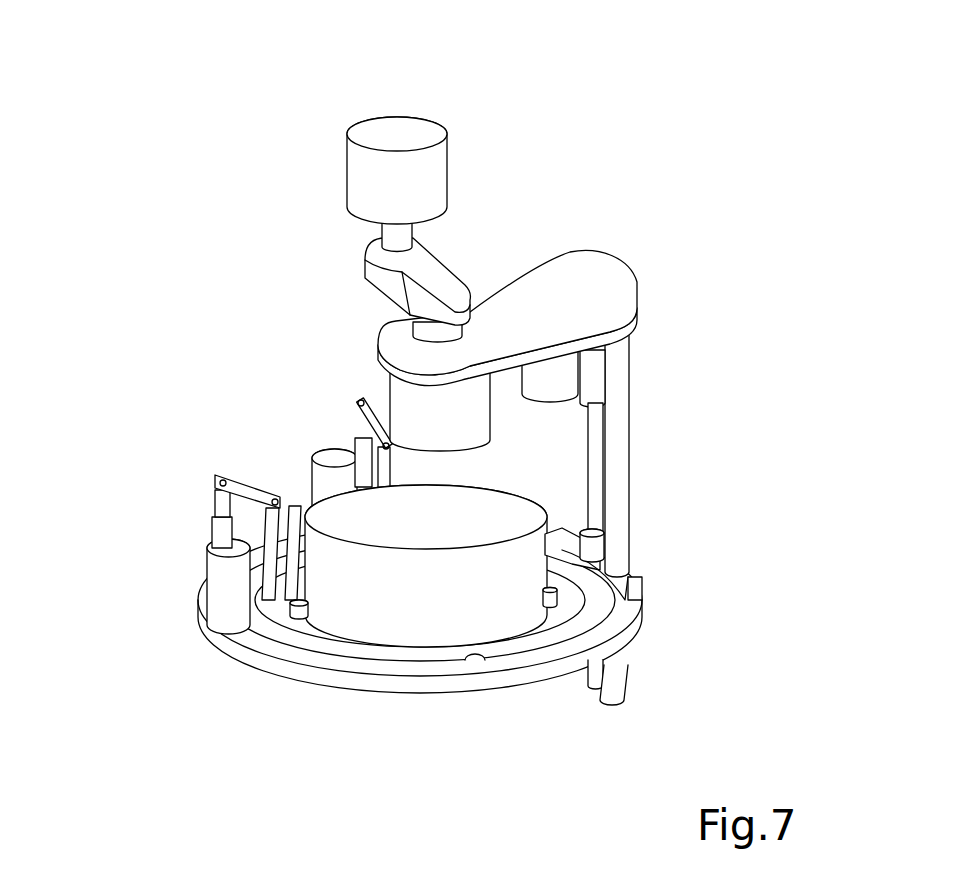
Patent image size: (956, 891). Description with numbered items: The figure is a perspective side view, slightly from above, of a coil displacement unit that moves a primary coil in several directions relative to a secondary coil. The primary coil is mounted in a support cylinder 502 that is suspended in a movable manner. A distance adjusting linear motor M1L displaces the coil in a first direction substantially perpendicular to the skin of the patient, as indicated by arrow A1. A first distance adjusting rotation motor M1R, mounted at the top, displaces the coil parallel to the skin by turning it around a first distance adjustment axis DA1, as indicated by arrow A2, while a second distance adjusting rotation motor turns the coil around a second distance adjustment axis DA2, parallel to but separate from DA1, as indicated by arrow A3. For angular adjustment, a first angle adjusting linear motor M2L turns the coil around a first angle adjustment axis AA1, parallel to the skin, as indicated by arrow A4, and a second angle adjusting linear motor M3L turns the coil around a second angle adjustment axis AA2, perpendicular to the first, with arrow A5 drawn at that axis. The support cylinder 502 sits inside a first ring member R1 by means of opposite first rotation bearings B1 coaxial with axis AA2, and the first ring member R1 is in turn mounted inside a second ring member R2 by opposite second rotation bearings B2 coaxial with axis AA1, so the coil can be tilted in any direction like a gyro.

The first distance adjustment axis DA1 is at (397, 117).
The first distance adjusting rotation motor M1R is at (448, 152).
The arrow indicating rotation around first distance adjustment axis A2 is at (524, 262).
The second distance adjustment axis DA2 is at (441, 451).
The arrow indicating rotation around second distance adjustment axis A3 is at (392, 368).
The arrow indicating first direction A1 is at (710, 258).
The second angle adjusting linear motor M3L is at (333, 445).
The arrow indicating turning around first angle adjustment axis A4 is at (264, 474).
The distance adjusting linear motor M1L is at (552, 402).
The first angle adjusting linear motor M2L is at (208, 547).
The arrow indicating tilting movement A5 is at (171, 628).
The second angle adjustment axis AA2 is at (202, 612).
The first rotation bearings B1 is at (300, 605).
The first ring member R1 is at (297, 640).
The second ring member R2 is at (307, 670).
The support cylinder 502 is at (387, 615).
The second rotation bearings B2 is at (470, 658).
The first angle adjustment axis AA1 is at (485, 675).